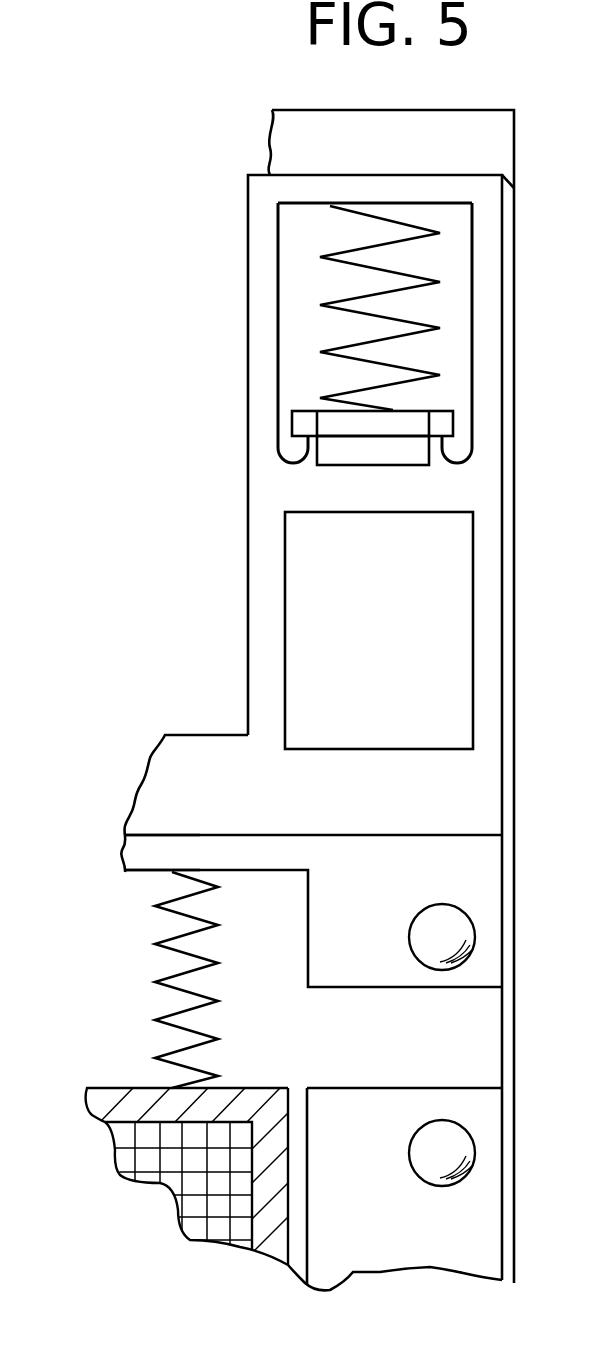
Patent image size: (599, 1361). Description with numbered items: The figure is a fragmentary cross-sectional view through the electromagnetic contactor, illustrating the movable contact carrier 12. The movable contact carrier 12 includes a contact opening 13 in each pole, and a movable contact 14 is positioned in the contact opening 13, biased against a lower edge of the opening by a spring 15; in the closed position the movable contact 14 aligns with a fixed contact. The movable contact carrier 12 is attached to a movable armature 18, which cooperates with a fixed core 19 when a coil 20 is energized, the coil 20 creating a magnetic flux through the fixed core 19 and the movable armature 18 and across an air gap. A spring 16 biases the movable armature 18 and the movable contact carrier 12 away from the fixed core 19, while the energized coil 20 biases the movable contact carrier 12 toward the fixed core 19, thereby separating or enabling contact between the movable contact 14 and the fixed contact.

The movable contact carrier 12 is at (248, 570).
The contact opening 13 is at (278, 353).
The movable contact 14 is at (300, 423).
The spring 15 is at (323, 256).
The spring 16 is at (158, 978).
The movable armature 18 is at (130, 852).
The fixed core 19 is at (382, 1262).
The coil 20 is at (175, 1163).